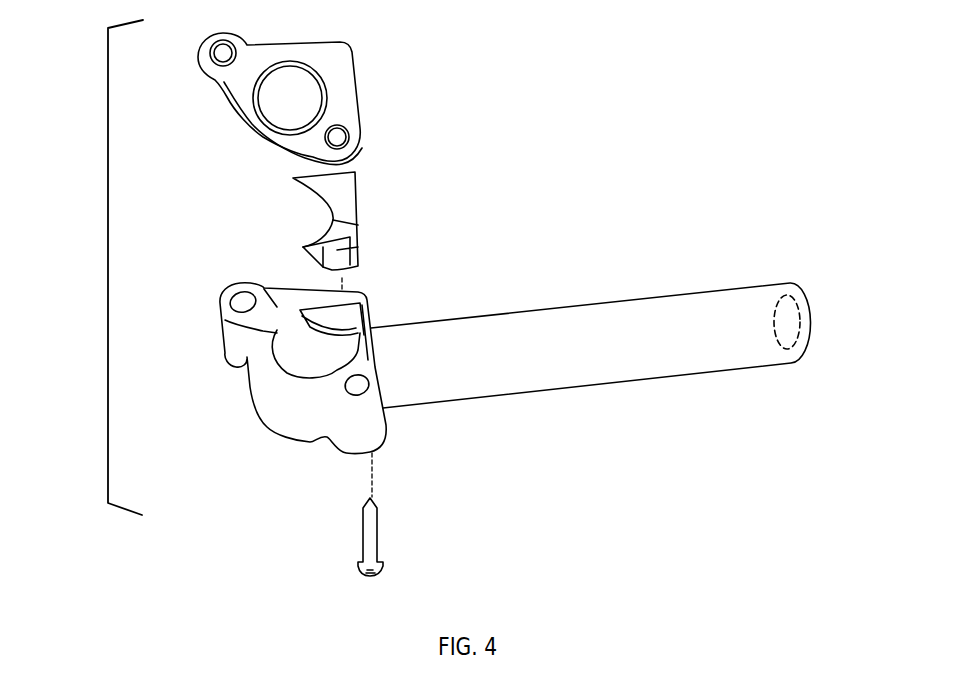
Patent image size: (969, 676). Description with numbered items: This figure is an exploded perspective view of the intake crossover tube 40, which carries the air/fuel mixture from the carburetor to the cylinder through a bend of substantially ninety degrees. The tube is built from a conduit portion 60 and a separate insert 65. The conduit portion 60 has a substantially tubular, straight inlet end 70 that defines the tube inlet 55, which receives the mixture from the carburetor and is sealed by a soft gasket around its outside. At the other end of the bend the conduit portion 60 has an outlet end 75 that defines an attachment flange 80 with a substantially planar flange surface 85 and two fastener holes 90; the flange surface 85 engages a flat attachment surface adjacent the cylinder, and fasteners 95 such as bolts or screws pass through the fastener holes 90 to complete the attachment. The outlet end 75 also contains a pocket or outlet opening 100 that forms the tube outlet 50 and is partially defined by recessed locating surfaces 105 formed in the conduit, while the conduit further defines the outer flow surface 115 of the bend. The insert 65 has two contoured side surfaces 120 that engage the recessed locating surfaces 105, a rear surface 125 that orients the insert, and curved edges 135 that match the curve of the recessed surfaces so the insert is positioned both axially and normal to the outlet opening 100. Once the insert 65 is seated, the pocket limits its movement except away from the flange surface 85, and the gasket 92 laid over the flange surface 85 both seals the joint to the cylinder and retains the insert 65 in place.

The intake crossover tube 40 is at (650, 107).
The gasket 92 is at (327, 53).
The insert 65 is at (362, 233).
The rear surface 125 is at (357, 173).
The side surfaces 120 is at (357, 168).
The curved edge 135 is at (302, 303).
The tube outlet 50 is at (285, 303).
The recessed locating surfaces 105 is at (320, 312).
The outlet opening 100 is at (352, 322).
The outer flow surface 115 is at (290, 333).
The flange surface 85 is at (260, 327).
The attachment flange 80 is at (247, 358).
The outlet end 75 is at (273, 410).
The fastener holes 90 is at (243, 303).
The fastener 95 is at (368, 515).
The conduit portion 60 is at (590, 323).
The inlet end 70 is at (730, 300).
The tube inlet 55 is at (780, 348).